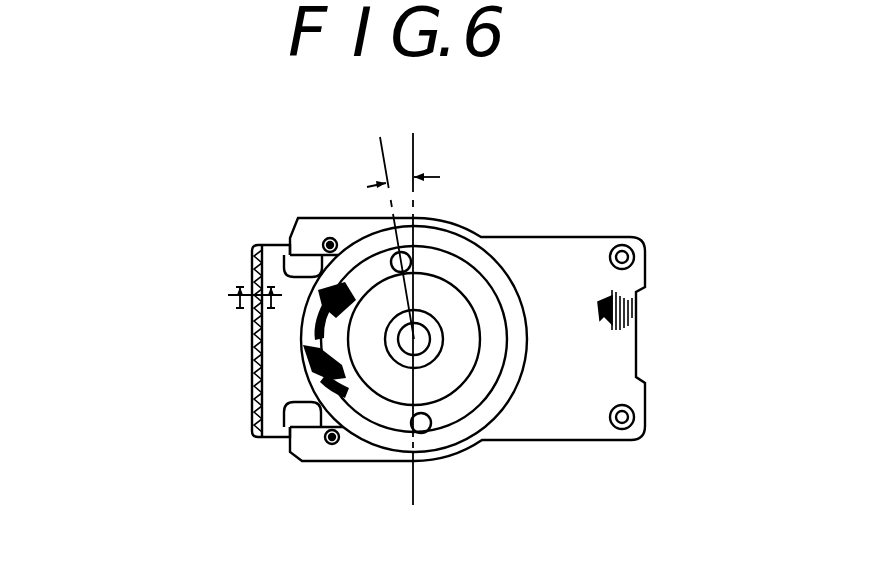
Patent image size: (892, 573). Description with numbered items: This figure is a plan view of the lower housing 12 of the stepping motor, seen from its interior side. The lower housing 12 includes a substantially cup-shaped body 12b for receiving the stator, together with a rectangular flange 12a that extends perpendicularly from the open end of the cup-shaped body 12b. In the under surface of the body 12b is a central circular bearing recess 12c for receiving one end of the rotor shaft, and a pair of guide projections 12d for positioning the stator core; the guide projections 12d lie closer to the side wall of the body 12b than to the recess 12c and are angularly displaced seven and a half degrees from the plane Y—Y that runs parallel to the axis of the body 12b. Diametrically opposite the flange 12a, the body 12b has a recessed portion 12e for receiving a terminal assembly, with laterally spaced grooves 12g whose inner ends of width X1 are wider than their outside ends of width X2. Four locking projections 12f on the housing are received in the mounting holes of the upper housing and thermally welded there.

The lower housing 12 is at (99, 124).
The rectangular flange 12a is at (628, 350).
The cup-shaped body 12b is at (485, 270).
The central circular bearing recess 12c is at (416, 342).
The guide projections 12d is at (391, 263).
The recessed portion 12e is at (242, 352).
The locking projections 12f is at (324, 240).
The grooves 12g is at (257, 357).